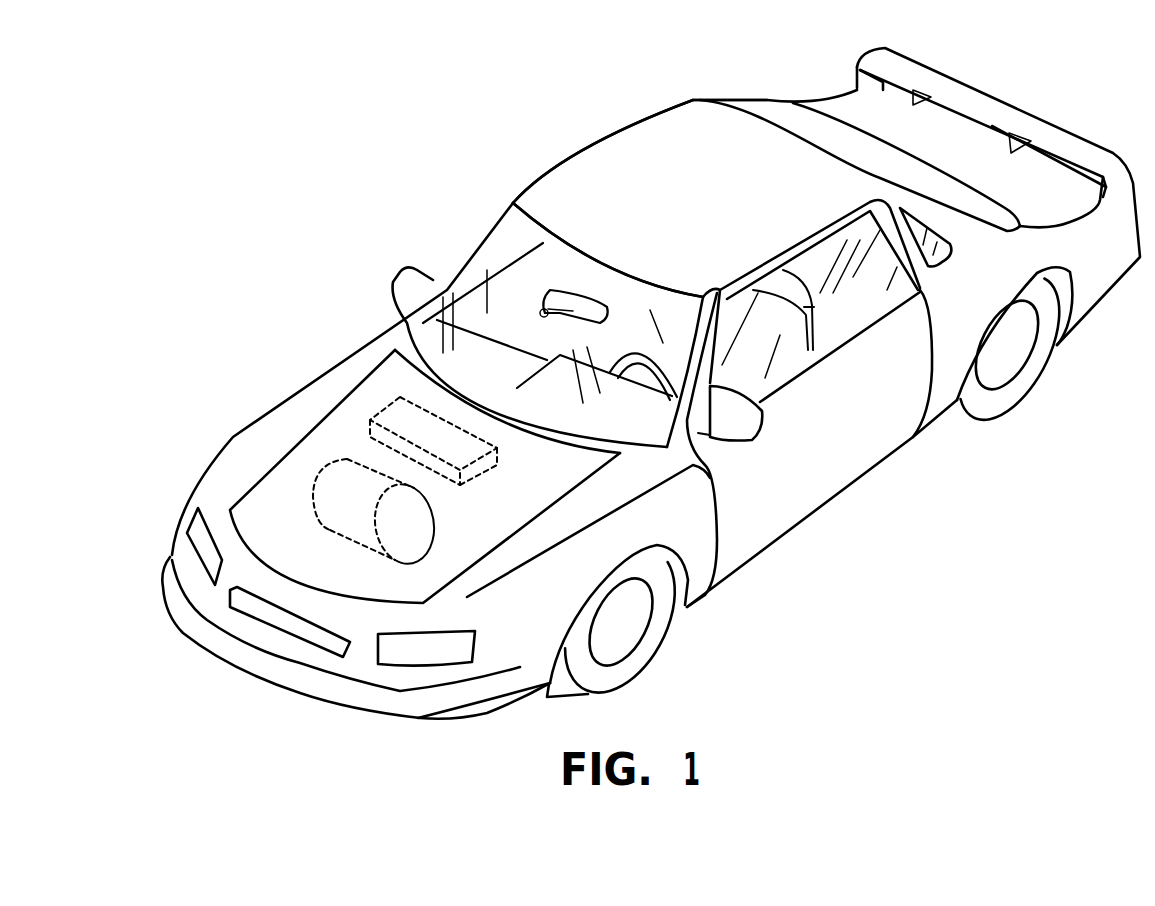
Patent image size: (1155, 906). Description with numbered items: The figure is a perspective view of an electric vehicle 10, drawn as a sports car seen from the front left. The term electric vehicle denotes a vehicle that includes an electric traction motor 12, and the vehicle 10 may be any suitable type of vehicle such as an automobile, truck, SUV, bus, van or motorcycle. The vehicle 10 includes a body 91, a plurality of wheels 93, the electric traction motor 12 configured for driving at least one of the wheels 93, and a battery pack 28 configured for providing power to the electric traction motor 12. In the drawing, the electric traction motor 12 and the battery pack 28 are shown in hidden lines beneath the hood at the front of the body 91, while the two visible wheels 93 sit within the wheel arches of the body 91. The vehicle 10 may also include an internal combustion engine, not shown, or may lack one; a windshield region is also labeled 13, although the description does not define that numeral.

The electric vehicle 10 is at (390, 187).
The electric traction motor 12 is at (337, 493).
The windshield 13 is at (527, 277).
The battery pack 28 is at (407, 417).
The body 91 is at (655, 140).
The wheels 93 is at (647, 658).